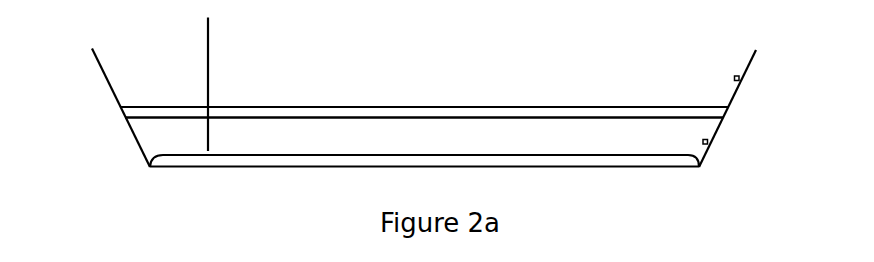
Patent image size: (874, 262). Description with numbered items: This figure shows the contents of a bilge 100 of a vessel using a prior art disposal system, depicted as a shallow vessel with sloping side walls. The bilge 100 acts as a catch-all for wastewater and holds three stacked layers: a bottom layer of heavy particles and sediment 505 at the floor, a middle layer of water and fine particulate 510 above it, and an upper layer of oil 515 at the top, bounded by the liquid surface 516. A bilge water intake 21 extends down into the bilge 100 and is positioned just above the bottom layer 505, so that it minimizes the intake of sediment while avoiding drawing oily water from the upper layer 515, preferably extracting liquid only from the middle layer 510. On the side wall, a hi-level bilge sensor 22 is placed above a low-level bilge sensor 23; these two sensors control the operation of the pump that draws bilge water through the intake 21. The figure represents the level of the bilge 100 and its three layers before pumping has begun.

The bilge 100 is at (784, 132).
The bilge water intake 21 is at (196, 149).
The hi-level bilge sensor 22 is at (763, 78).
The low-level bilge sensor 23 is at (722, 154).
The bottom layer of heavy particles and sediment 505 is at (566, 158).
The middle layer of water and fine particulate 510 is at (424, 136).
The upper layer of oil 515 is at (589, 112).
The liquid surface 516 is at (499, 107).